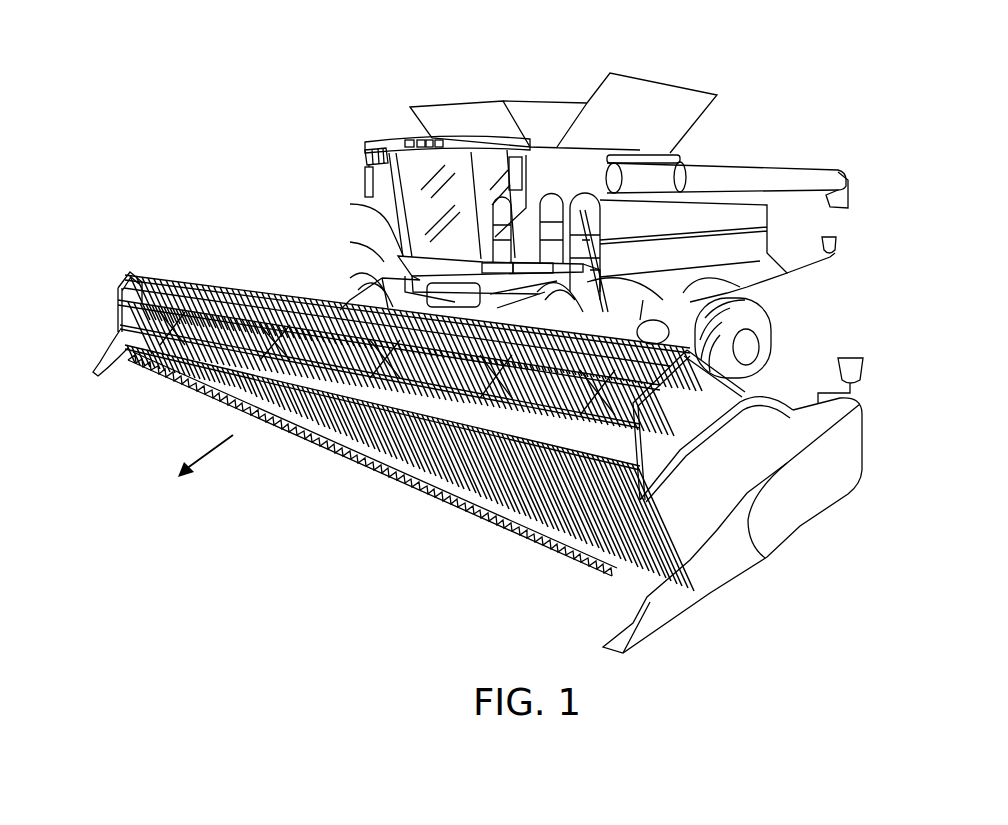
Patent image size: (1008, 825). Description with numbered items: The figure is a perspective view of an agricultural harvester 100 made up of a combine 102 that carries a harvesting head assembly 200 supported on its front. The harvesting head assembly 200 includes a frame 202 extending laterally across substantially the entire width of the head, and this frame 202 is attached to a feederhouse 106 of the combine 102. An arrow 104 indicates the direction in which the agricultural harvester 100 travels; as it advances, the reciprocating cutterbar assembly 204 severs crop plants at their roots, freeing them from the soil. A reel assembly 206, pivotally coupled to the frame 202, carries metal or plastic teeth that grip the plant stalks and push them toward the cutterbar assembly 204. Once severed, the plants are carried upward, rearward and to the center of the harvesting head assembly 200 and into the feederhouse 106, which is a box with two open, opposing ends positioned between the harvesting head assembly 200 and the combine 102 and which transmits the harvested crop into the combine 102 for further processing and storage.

The agricultural harvester 100 is at (92, 82).
The combine 102 is at (393, 226).
The arrow 104 is at (206, 440).
The feederhouse 106 is at (395, 286).
The harvesting head assembly 200 is at (264, 535).
The frame 202 is at (713, 577).
The reciprocating cutterbar assembly 204 is at (447, 503).
The reel assembly 206 is at (207, 281).